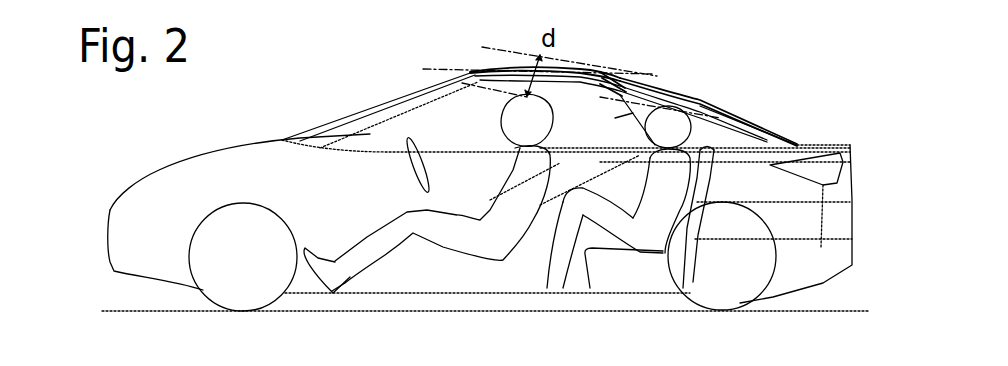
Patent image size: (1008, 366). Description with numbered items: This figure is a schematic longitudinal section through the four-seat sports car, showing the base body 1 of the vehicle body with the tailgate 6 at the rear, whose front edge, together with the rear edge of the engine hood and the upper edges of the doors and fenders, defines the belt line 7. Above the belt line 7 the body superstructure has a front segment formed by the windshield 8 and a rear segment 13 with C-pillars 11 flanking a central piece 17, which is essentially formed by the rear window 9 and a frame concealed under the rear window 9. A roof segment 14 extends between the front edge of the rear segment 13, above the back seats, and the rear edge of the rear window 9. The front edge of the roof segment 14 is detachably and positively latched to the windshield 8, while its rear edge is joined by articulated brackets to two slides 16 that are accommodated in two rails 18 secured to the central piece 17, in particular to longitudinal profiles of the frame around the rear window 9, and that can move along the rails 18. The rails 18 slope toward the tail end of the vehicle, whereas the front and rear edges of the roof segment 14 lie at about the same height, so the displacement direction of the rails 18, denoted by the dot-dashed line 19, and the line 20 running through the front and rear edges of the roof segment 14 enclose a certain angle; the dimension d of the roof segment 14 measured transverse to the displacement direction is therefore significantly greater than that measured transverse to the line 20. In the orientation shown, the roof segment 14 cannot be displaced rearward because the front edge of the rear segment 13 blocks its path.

The base body 1 is at (157, 190).
The tailgate 6 is at (815, 140).
The belt line 7 is at (388, 150).
The windshield 8 is at (395, 102).
The rear window 9 is at (697, 100).
The C-pillar 11 is at (643, 130).
The rear segment 13 is at (670, 90).
The roof segment 14 is at (580, 72).
The slide 16 is at (610, 80).
The central piece 17 is at (671, 73).
The rail 18 is at (717, 120).
The dot-dashed line 19 is at (762, 118).
The line 20 is at (508, 68).